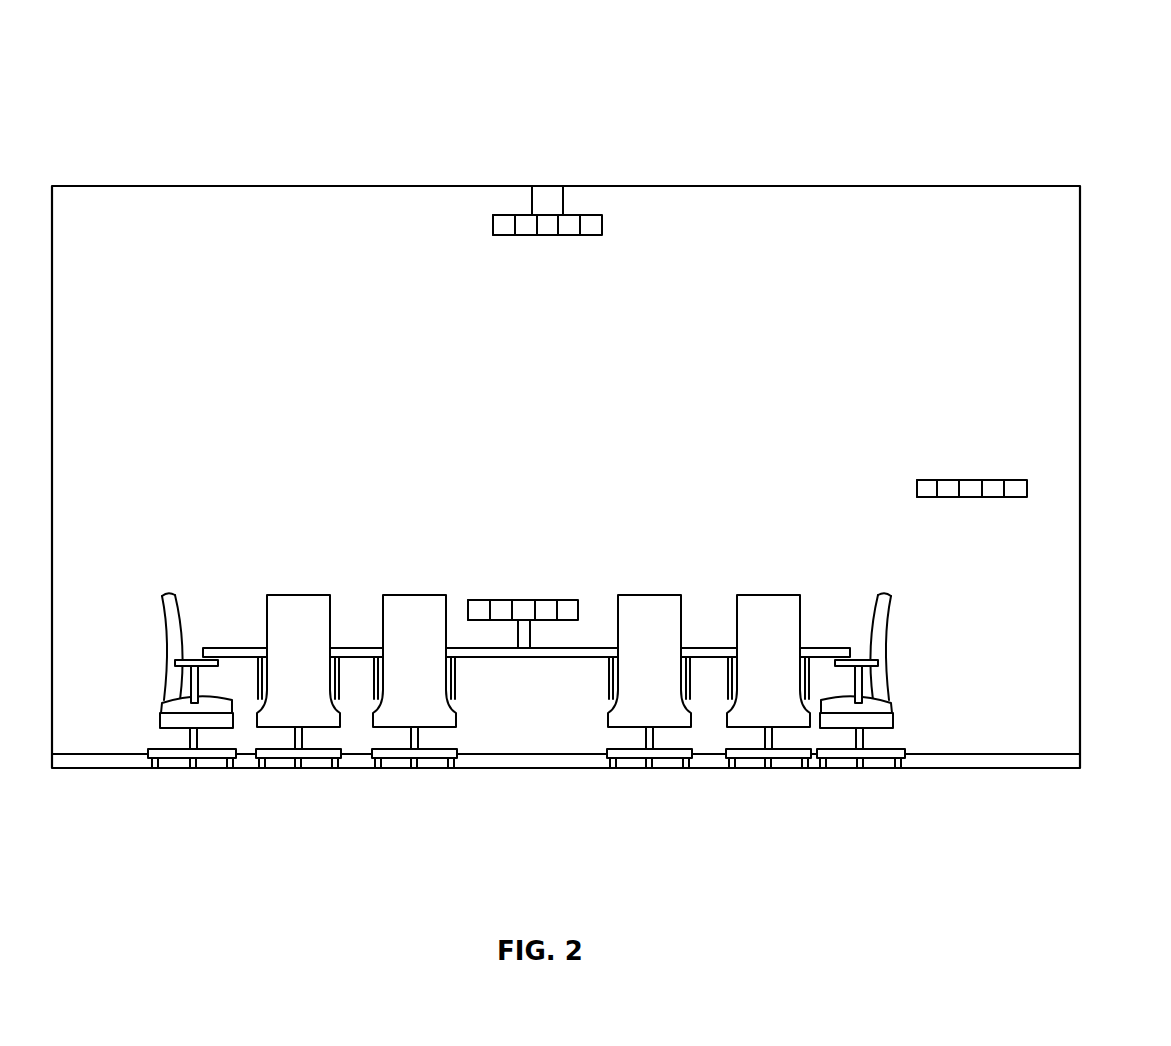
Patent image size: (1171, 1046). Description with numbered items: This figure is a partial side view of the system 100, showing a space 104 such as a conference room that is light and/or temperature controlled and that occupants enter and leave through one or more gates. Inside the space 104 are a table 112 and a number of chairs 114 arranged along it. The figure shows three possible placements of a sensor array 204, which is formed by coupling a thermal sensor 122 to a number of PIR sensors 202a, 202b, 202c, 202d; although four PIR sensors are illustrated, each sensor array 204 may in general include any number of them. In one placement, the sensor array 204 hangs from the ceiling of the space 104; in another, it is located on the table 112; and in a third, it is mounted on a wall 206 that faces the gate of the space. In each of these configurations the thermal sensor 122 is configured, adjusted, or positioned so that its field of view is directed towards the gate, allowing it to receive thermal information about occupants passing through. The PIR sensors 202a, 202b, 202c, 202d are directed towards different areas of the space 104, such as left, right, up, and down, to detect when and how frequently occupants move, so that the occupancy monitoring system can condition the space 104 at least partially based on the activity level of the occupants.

The system 100 is at (1074, 75).
The space 104 is at (162, 420).
The table 112 is at (233, 648).
The chairs 114 is at (172, 643).
The thermal sensor 122 is at (602, 222).
The PIR sensor 202a is at (493, 220).
The PIR sensor 202b is at (516, 236).
The PIR sensor 202c is at (548, 236).
The PIR sensor 202d is at (570, 236).
The sensor array 204 is at (721, 417).
The wall 206 is at (900, 382).